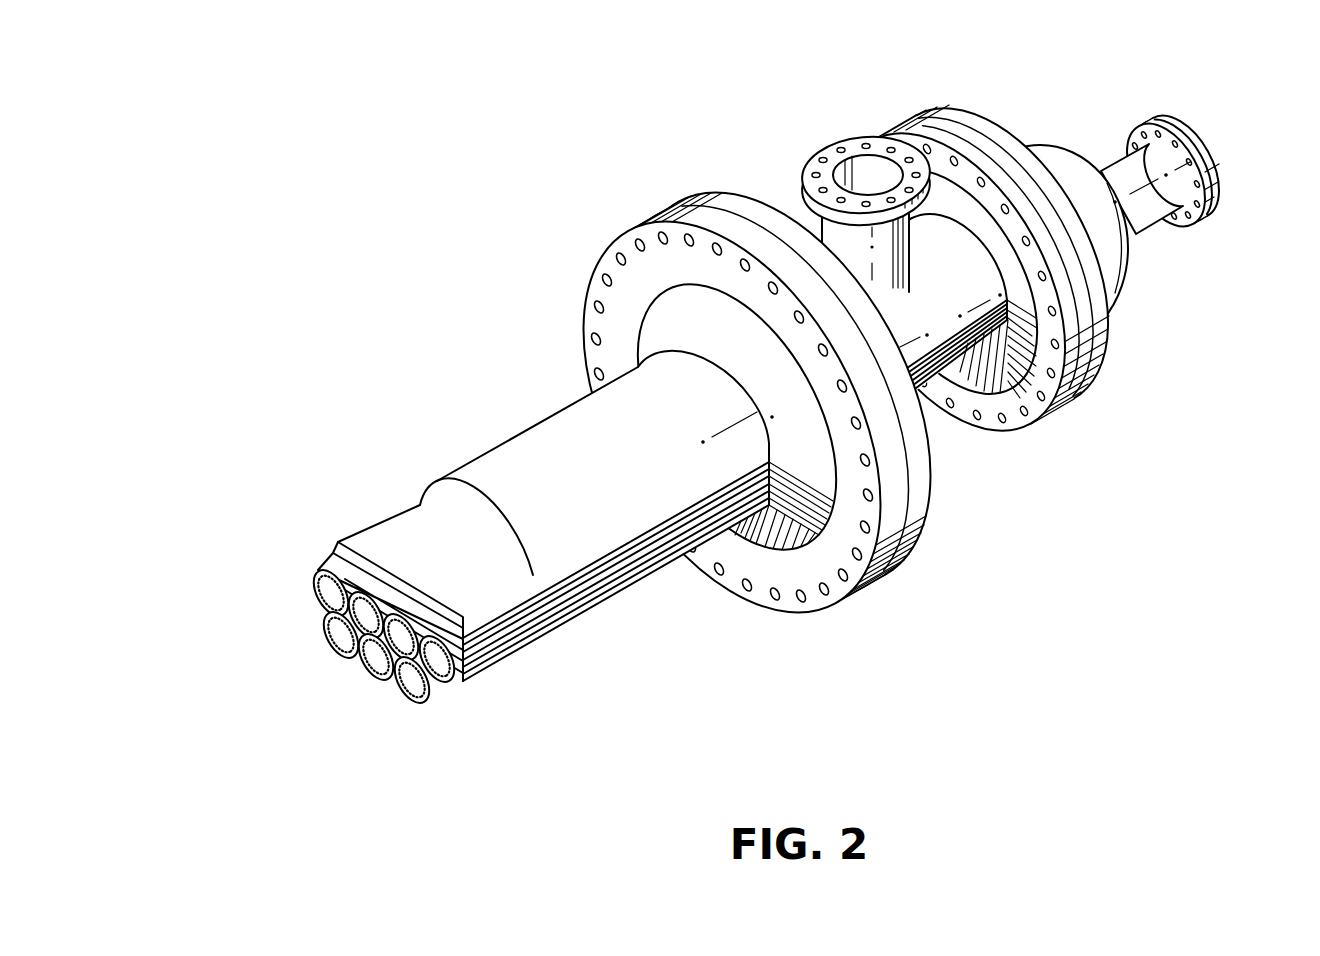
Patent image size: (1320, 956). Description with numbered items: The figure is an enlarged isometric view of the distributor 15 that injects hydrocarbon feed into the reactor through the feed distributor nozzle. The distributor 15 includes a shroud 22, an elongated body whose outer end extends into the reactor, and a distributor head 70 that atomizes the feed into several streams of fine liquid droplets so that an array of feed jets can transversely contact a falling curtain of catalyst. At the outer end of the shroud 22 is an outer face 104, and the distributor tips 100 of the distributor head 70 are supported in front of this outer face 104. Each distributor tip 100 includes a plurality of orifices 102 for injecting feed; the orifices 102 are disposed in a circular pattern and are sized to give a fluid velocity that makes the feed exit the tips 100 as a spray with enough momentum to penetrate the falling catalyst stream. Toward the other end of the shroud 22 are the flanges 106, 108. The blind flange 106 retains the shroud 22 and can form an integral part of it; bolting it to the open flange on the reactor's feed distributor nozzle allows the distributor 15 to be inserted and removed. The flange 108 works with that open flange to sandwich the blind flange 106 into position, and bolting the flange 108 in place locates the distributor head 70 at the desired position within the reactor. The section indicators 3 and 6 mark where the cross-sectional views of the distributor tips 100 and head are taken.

The distributor 15 is at (725, 419).
The shroud 22 is at (535, 433).
The distributor head 70 is at (372, 636).
The distributor tips 100 is at (433, 693).
The orifices 102 is at (337, 647).
The outer face 104 is at (390, 690).
The blind flange 106 is at (650, 221).
The flange 108 is at (733, 208).
The section line 3- 3 is at (722, 421).
The section line 6- 6 is at (270, 690).